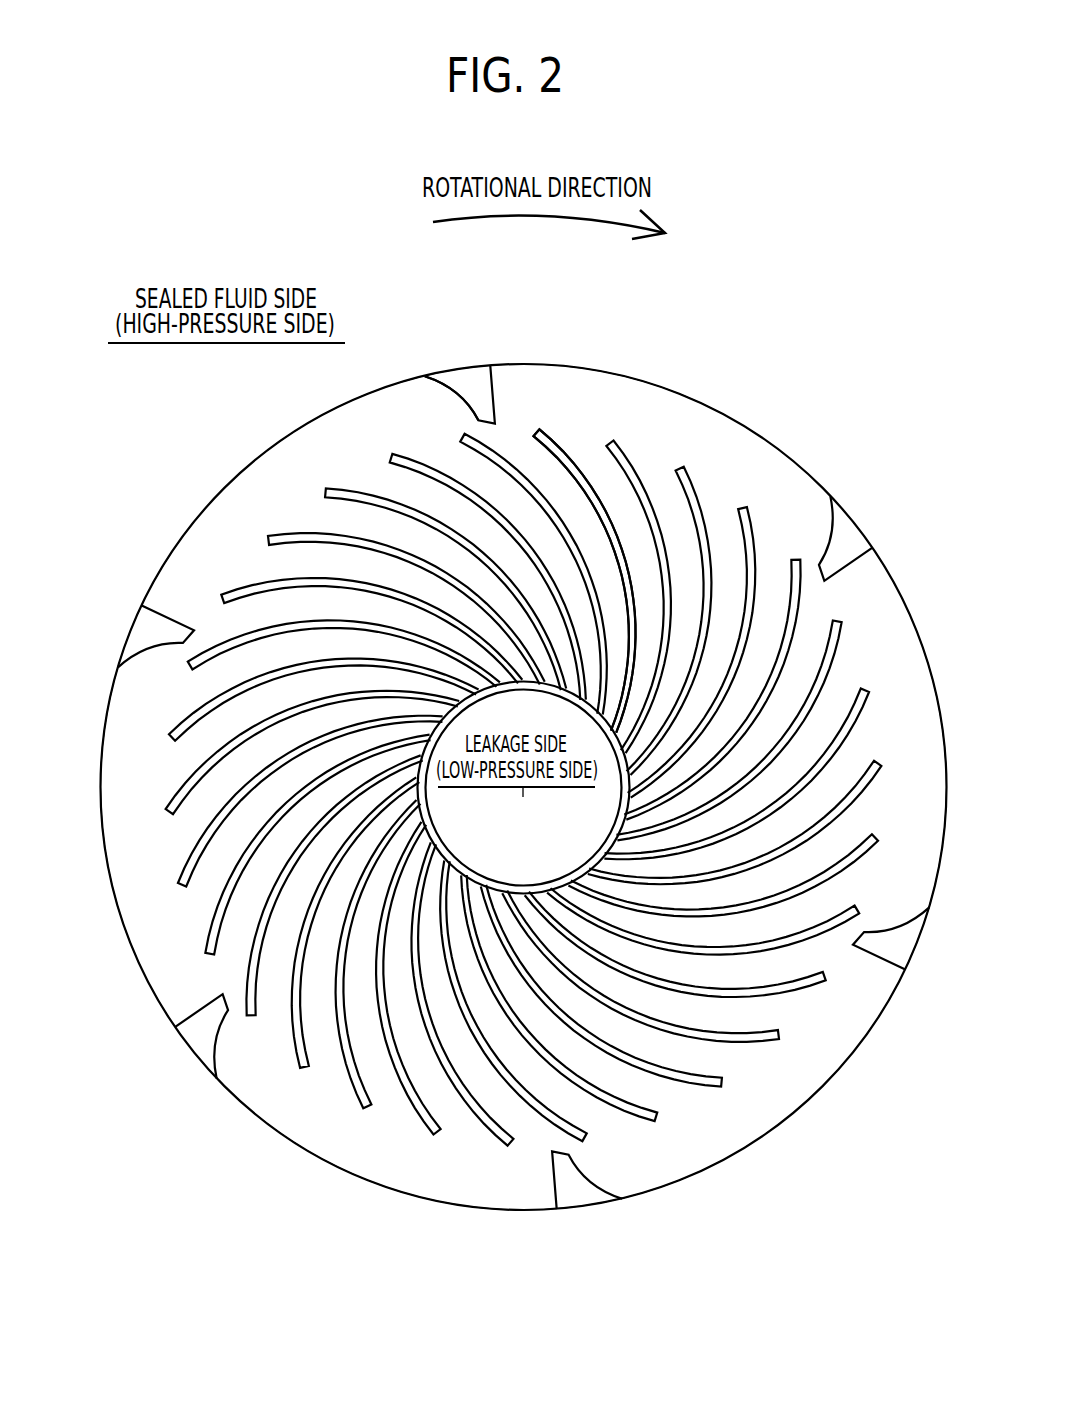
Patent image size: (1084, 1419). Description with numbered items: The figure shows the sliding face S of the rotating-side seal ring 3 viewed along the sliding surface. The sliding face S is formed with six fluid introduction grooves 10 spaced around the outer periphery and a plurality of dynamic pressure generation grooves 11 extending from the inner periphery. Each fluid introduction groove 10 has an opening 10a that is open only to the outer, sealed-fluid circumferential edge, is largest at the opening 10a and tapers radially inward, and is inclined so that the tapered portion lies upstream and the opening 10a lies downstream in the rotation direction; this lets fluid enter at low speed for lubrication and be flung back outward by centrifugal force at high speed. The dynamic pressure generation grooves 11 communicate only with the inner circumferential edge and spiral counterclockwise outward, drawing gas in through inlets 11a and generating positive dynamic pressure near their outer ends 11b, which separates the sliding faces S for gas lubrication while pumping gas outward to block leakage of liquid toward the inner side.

The rotating-side seal ring 3 is at (717, 412).
The sliding face S is at (750, 473).
The fluid introduction groove 10 is at (488, 382).
The opening 10a is at (478, 382).
The dynamic pressure generation groove 11 is at (647, 500).
The inlet 11a is at (627, 740).
The end 11b is at (603, 520).